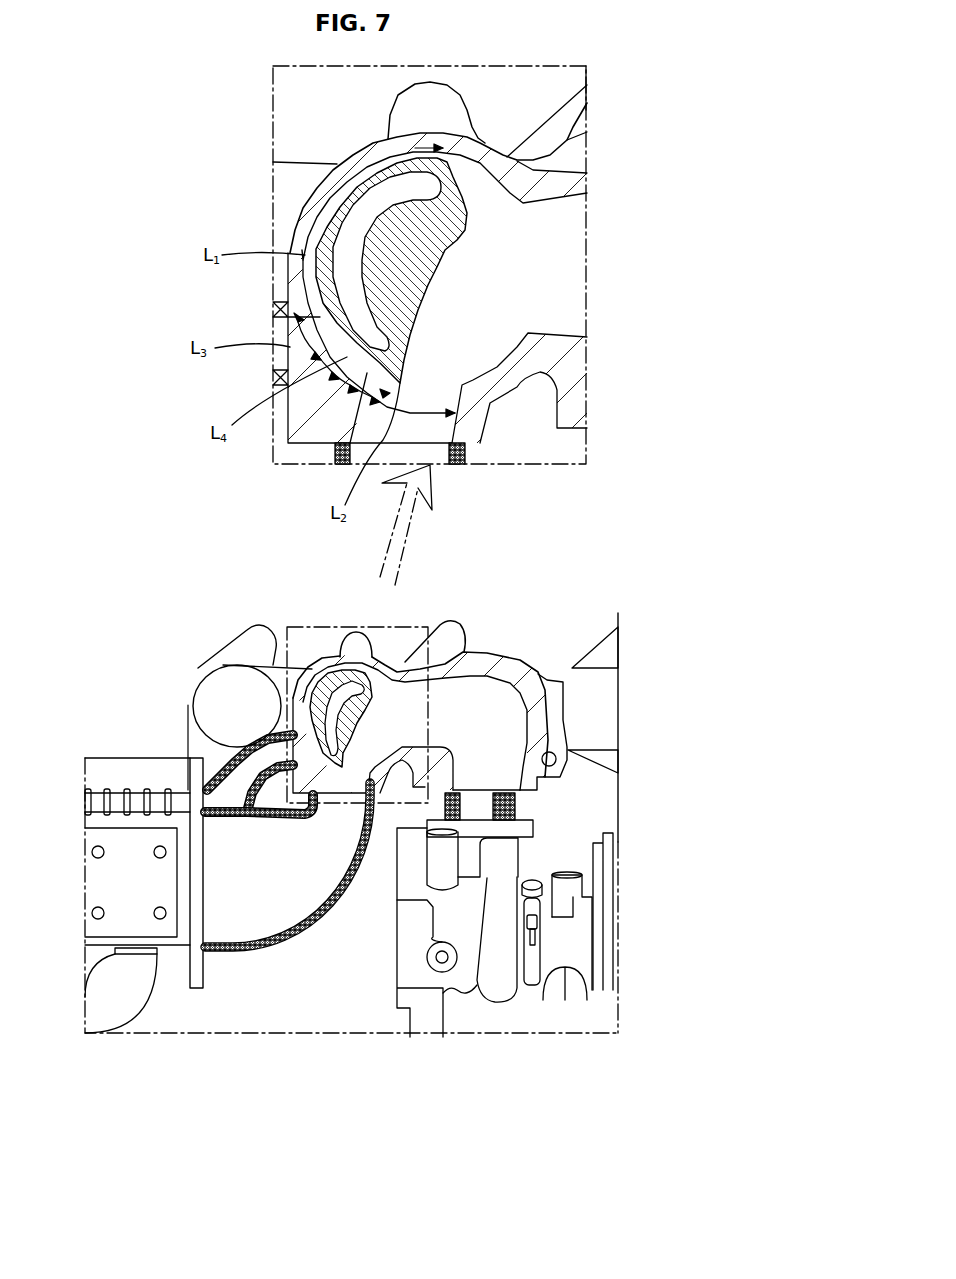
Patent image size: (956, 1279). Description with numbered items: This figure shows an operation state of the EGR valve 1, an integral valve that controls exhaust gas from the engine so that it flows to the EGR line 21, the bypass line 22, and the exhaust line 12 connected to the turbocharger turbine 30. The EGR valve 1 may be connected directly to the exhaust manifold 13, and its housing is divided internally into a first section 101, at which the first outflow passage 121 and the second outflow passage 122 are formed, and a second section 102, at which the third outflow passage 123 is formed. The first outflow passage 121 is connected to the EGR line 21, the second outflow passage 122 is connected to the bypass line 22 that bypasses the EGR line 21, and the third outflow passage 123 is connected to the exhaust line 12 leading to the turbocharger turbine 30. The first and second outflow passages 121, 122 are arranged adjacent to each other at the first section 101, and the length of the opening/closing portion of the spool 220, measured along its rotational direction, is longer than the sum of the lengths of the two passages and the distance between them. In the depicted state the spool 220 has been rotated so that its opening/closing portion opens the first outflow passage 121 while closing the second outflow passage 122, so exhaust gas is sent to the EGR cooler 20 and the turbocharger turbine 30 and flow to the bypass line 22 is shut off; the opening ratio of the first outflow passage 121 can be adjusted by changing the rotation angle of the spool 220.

The EGR valve 1 is at (525, 650).
The exhaust line 12 is at (527, 805).
The exhaust manifold 13 is at (605, 707).
The EGR cooler 20 is at (103, 887).
The EGR line 21 is at (232, 920).
The bypass line 22 is at (247, 778).
The turbocharger turbine 30 is at (490, 1003).
The first section 101 is at (379, 738).
The second section 102 is at (471, 734).
The first outflow passage 121 is at (342, 730).
The second outflow passage 122 is at (305, 758).
The third outflow passage 123 is at (482, 773).
The spool 220 is at (359, 782).